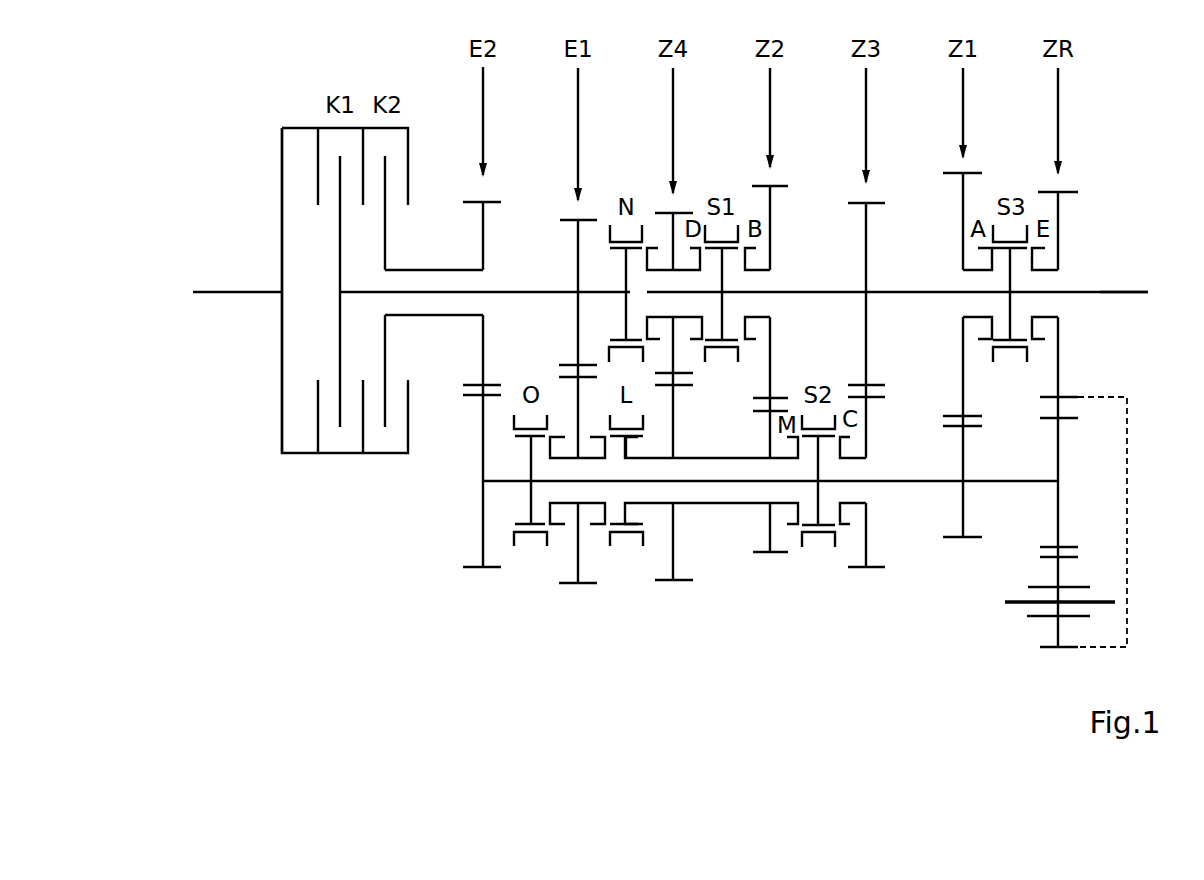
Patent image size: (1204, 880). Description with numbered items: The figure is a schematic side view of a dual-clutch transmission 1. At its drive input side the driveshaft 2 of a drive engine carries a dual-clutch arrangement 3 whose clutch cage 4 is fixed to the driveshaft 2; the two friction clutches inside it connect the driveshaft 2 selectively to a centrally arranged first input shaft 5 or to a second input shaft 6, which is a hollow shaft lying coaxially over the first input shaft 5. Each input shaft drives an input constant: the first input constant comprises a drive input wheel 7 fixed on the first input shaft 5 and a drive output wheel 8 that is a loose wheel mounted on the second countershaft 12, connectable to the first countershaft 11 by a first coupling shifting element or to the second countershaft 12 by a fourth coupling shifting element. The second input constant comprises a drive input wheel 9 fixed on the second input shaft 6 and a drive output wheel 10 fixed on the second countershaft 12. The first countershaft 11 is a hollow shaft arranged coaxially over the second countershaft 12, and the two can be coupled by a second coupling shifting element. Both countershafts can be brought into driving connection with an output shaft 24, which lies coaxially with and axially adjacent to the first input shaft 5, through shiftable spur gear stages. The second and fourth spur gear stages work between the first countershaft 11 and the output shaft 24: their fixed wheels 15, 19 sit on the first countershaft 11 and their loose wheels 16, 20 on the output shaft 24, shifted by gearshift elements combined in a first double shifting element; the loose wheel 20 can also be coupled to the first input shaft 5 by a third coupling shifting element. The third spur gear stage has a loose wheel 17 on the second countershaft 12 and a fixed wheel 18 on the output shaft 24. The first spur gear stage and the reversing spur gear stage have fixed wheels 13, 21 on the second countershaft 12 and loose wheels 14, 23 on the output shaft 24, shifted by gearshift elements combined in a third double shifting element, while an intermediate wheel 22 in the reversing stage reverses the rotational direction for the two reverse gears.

The dual-clutch transmission 1 is at (277, 571).
The driveshaft 2 is at (240, 292).
The dual-clutch arrangement 3 is at (258, 362).
The clutch cage 4 is at (282, 220).
The first input shaft 5 is at (513, 292).
The second input shaft 6 is at (432, 270).
The drive input wheel 7 is at (578, 265).
The drive output wheel 8 is at (575, 540).
The drive input wheel 9 is at (478, 355).
The drive output wheel 10 is at (478, 440).
The first countershaft 11 is at (718, 507).
The second countershaft 12 is at (903, 483).
The fixed wheel 13 is at (963, 503).
The loose wheel 14 is at (963, 210).
The fixed wheel 15 is at (772, 513).
The loose wheel 16 is at (770, 235).
The loose wheel 17 is at (860, 533).
The fixed wheel 18 is at (866, 255).
The fixed wheel 19 is at (673, 540).
The loose wheel 20 is at (660, 240).
The fixed wheel 21 is at (1055, 513).
The intermediate wheel 22 is at (1062, 573).
The loose wheel 23 is at (1058, 240).
The output shaft 24 is at (1107, 292).